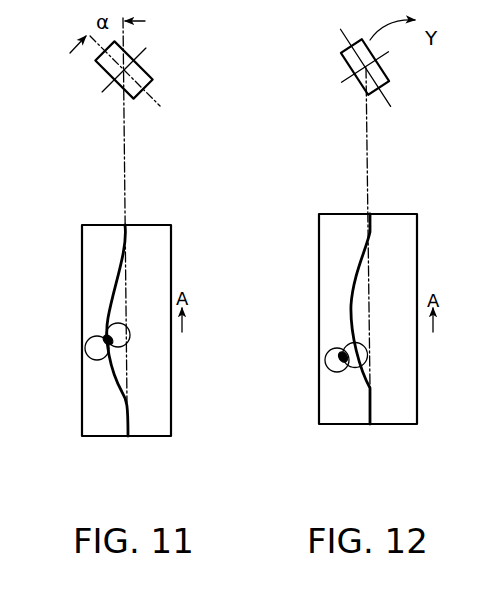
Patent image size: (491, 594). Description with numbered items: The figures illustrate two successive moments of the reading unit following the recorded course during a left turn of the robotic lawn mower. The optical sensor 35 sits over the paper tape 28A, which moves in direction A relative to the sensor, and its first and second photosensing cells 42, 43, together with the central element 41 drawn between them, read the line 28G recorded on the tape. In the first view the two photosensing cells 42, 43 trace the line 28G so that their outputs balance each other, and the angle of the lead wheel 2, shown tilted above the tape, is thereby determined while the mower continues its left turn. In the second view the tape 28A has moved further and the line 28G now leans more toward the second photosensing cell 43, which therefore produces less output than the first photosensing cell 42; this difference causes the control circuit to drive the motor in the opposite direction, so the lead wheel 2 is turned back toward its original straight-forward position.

In FIG. 11, the lead wheel 2 is at (153, 80).
In FIG. 12, the lead wheel 2 is at (387, 81).
In FIG. 11, the paper tape 28A is at (82, 405).
In FIG. 12, the paper tape 28A is at (320, 404).
In FIG. 11, the line 28G is at (115, 291).
In FIG. 12, the line 28G is at (350, 287).
In FIG. 11, the optical sensor 35 is at (41, 257).
In FIG. 12, the optical sensor 35 is at (277, 257).
In FIG. 11, the center mark 41 is at (138, 373).
In FIG. 12, the center mark 41 is at (365, 390).
In FIG. 11, the first photosensing cell 42 is at (90, 344).
In FIG. 12, the first photosensing cell 42 is at (332, 349).
In FIG. 11, the second photosensing cell 43 is at (107, 323).
In FIG. 12, the second photosensing cell 43 is at (350, 343).